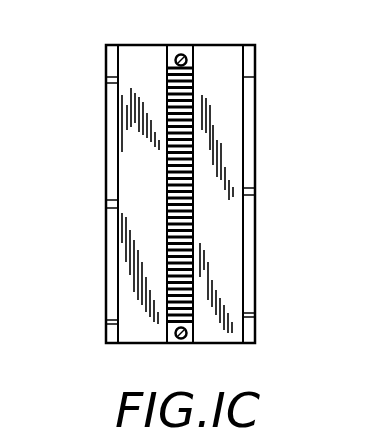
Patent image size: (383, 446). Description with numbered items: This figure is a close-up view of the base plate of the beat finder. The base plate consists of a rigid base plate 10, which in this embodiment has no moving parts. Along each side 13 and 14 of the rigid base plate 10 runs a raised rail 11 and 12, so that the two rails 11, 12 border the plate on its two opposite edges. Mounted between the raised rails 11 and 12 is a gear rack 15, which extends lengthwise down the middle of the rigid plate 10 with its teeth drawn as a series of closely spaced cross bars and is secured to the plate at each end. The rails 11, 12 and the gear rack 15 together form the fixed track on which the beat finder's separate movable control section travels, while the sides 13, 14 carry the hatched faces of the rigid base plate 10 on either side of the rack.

The rigid base plate 10 is at (272, 275).
The raised rail 11 is at (115, 46).
The raised rail 12 is at (246, 46).
The side of rigid plate 13 is at (107, 146).
The side of rigid plate 14 is at (255, 160).
The gear rack 15 is at (176, 337).